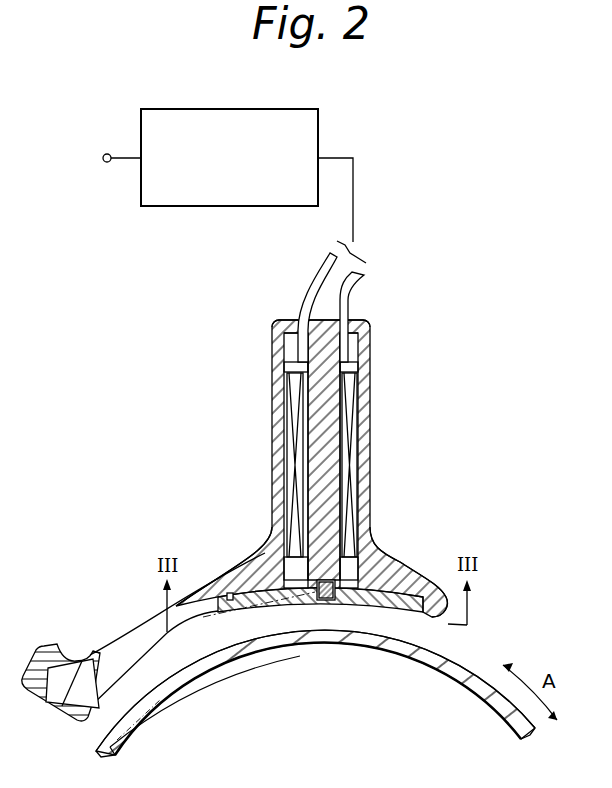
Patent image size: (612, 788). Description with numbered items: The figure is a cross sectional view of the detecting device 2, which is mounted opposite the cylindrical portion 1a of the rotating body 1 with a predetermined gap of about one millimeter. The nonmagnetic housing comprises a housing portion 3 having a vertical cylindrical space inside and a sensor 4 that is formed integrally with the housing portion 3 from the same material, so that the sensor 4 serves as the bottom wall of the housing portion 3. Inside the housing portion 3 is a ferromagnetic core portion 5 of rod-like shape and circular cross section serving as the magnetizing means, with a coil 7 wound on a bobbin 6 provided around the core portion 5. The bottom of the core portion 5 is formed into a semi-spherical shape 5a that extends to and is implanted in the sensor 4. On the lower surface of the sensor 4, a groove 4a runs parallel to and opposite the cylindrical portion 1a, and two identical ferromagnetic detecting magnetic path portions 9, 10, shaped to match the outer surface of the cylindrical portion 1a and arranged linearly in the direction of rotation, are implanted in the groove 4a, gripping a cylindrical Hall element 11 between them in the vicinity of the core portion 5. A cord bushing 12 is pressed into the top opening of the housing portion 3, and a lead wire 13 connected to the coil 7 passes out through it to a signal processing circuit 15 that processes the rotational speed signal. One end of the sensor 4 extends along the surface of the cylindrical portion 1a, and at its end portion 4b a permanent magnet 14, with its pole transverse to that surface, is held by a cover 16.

The rotating body 1 is at (233, 668).
The cylindrical portion 1a is at (477, 680).
The detecting device 2 is at (249, 306).
The housing portion 3 is at (278, 403).
The sensor 4 is at (147, 625).
The groove 4a is at (228, 598).
The end portion 4b is at (95, 667).
The core portion 5 is at (333, 395).
The semi-spherical shape 5a is at (337, 605).
The bobbin 6 is at (343, 438).
The coil 7 is at (353, 468).
The detecting magnetic path portion 9 is at (256, 563).
The detecting magnetic path portion 10 is at (418, 580).
The Hall element 11 is at (320, 600).
The cord bushing 12 is at (360, 324).
The lead wire 13 is at (317, 277).
The permanent magnet 14 is at (58, 713).
The signal processing circuit 15 is at (309, 109).
The cover 16 is at (43, 647).